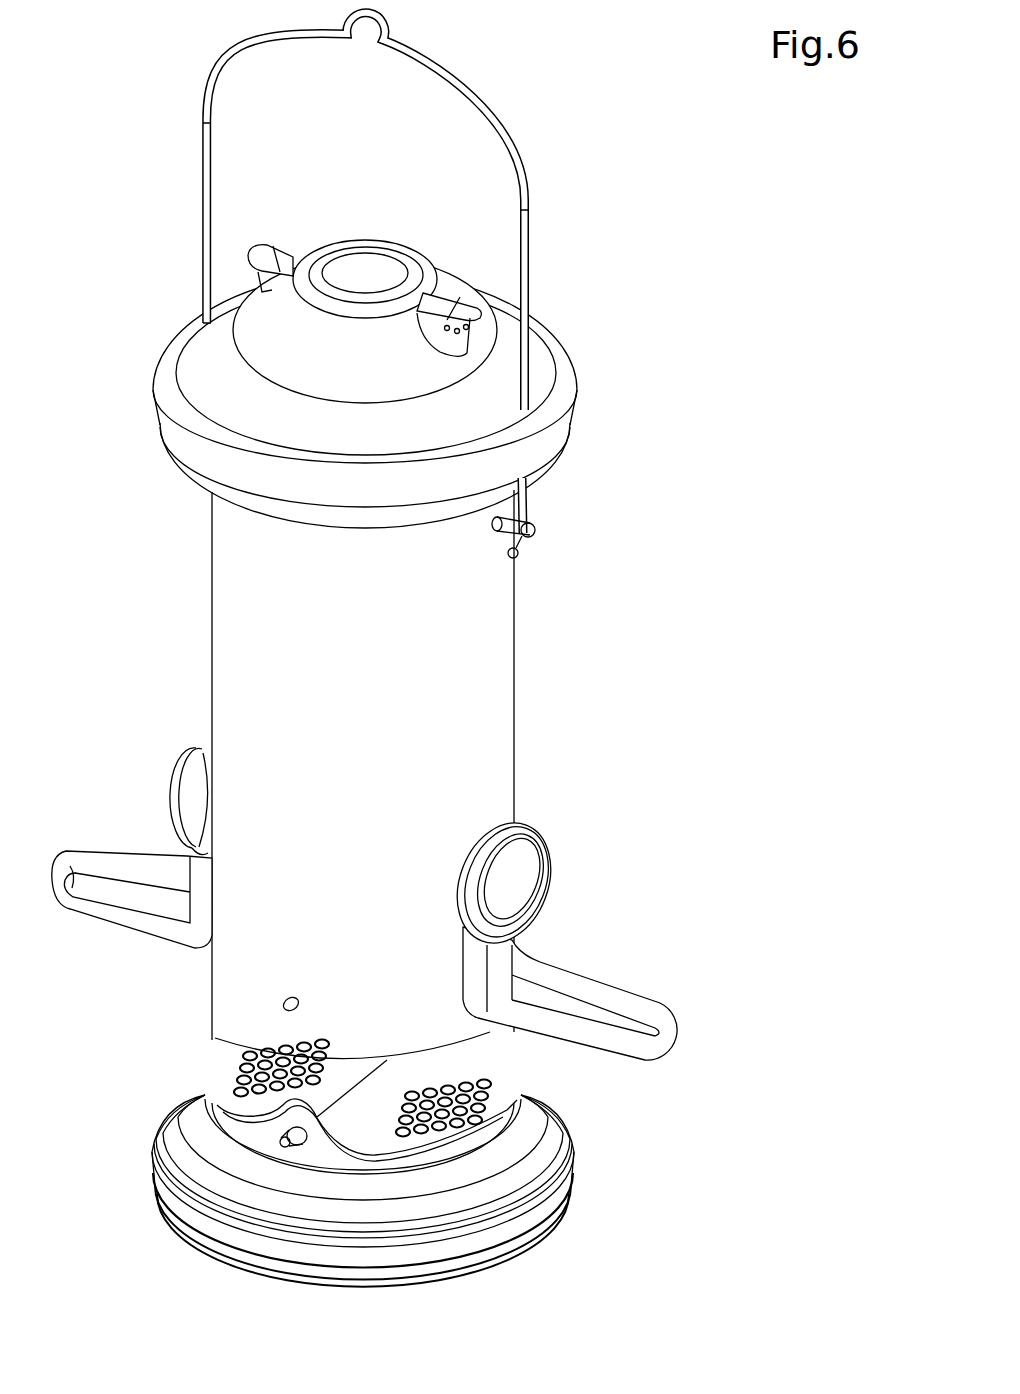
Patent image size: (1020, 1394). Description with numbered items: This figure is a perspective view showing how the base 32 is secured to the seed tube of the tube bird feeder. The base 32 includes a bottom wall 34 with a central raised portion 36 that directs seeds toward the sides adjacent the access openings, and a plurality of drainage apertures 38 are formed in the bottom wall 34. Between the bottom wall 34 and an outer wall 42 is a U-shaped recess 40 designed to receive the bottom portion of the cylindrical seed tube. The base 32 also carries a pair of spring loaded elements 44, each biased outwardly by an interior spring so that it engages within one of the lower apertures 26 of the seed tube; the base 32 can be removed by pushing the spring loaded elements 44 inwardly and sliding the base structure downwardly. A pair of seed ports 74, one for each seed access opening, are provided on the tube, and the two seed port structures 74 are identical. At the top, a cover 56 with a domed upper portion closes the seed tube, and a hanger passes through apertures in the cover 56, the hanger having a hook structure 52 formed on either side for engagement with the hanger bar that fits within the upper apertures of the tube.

The lower apertures 26 is at (273, 1013).
The base 32 is at (127, 1153).
The bottom wall 34 is at (500, 1072).
The central raised portion 36 is at (310, 1088).
The drainage apertures 38 is at (240, 1066).
The U-shaped recess 40 is at (480, 1133).
The outer wall 42 is at (520, 1118).
The spring loaded elements 44 is at (291, 1146).
The hook structure 52 is at (533, 553).
The cover 56 is at (535, 257).
The seed ports 74 is at (592, 943).